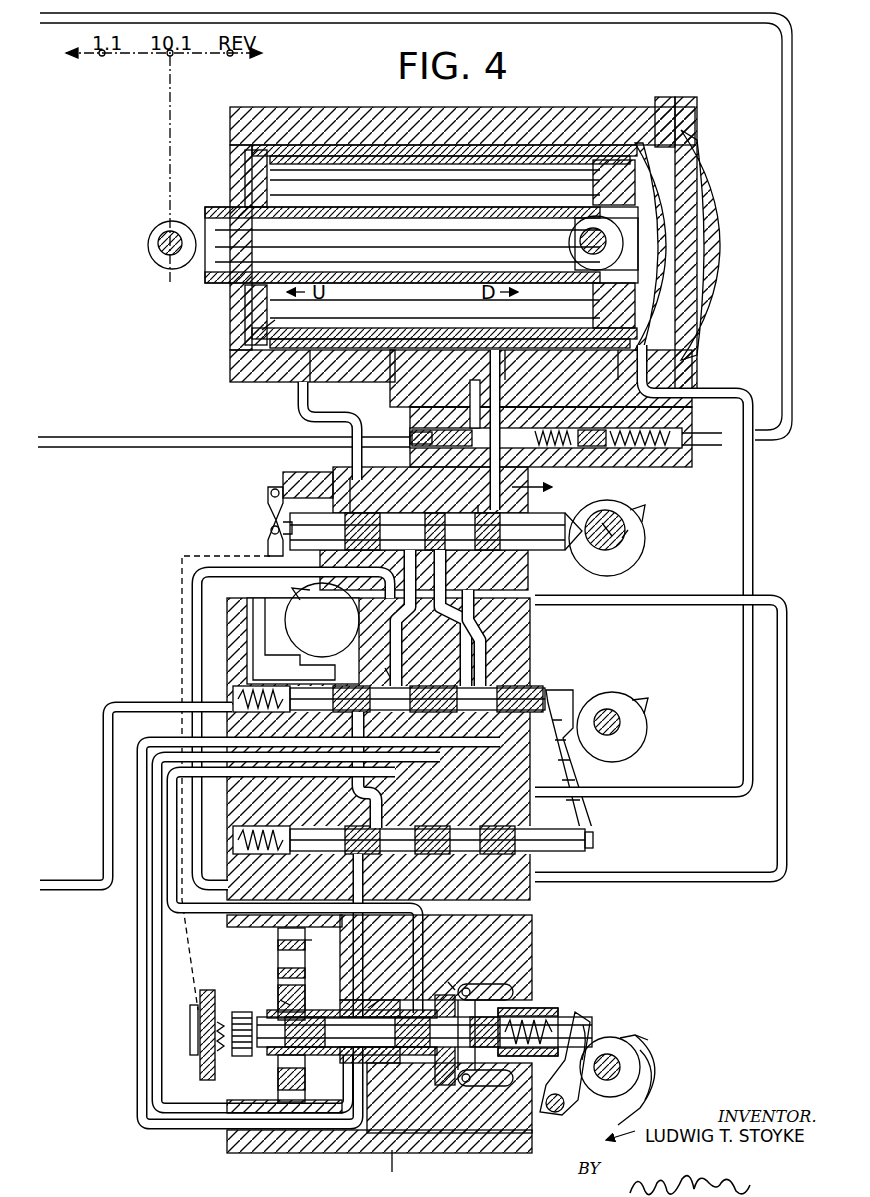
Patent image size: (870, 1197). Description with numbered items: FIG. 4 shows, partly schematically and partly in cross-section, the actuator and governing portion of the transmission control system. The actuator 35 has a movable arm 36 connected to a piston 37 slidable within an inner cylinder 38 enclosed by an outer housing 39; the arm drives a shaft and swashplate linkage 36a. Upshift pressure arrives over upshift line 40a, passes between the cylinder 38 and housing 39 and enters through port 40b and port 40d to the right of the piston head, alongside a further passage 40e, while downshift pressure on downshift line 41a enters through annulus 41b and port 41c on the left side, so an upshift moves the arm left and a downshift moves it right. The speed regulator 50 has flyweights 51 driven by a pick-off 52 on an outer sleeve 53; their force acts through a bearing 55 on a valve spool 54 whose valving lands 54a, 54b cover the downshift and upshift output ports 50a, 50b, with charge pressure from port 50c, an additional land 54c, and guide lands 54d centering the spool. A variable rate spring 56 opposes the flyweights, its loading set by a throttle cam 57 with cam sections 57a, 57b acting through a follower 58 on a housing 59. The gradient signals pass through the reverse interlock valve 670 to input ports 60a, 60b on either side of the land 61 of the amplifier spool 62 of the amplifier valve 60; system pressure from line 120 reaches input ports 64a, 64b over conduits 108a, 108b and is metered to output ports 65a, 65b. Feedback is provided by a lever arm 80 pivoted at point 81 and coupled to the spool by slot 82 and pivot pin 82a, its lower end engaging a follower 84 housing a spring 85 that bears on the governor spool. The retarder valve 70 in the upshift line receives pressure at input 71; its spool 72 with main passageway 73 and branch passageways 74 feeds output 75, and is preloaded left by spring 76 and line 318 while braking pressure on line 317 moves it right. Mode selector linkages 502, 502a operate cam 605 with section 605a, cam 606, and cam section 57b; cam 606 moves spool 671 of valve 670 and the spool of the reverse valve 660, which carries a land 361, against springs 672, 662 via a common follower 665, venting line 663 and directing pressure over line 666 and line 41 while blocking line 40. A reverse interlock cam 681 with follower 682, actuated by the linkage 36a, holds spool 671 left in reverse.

The line 318 is at (72, 22).
The line 317 is at (77, 437).
The actuator 35 is at (579, 114).
The movable arm 36 is at (203, 228).
The shaft and swashplate linkage 36a is at (158, 232).
The piston 37 is at (421, 276).
The inner cylinder 38 is at (533, 279).
The outer housing 39 is at (427, 118).
The upshift signal line 40 is at (502, 642).
The upshift line 40a is at (488, 388).
The port 40b is at (508, 352).
The port 40d is at (618, 345).
The passage 40e is at (602, 310).
The downshift signal line 41 is at (385, 668).
The downshift line 41a is at (296, 392).
The annulus 41b is at (318, 352).
The port 41c is at (272, 332).
The speed regulator 50 is at (432, 951).
The downshift output port 50a is at (290, 1080).
The upshift output port 50b is at (395, 1075).
The port 50c is at (392, 1105).
The flyweights 51 is at (513, 995).
The pick-off 52 is at (278, 957).
The outer sleeve 53 is at (300, 1062).
The valve spool 54 is at (345, 985).
The valving land 54a is at (323, 948).
The valving land 54b is at (368, 1008).
The gear tooth 54c is at (280, 1000).
The guide land 54d is at (466, 961).
The bearing 55 is at (529, 960).
The variable rate spring 56 is at (555, 1050).
The throttle cam 57 is at (661, 1037).
The cam section 57a is at (612, 1040).
The cam section 57b is at (650, 1072).
The follower 58 is at (578, 1050).
The housing 59 is at (590, 1035).
The amplifier valve 60 is at (541, 566).
The input port 60a is at (455, 650).
The input port 60b is at (403, 626).
The land 61 is at (427, 513).
The amplifier spool 62 is at (395, 513).
The input port 64a is at (472, 568).
The input port 64b is at (390, 583).
The output port 65a is at (351, 478).
The output port 65b is at (478, 482).
The retarder valve 70 is at (409, 404).
The input 71 is at (478, 420).
The spool 72 is at (602, 428).
The main passageway 73 is at (577, 428).
The branch passageways 74 is at (548, 468).
The valve output 75 is at (540, 428).
The spring 76 is at (695, 447).
The lever arm 80 is at (200, 556).
The pivot point 81 is at (268, 487).
The slot 82 is at (268, 536).
The pivot pin 82a is at (268, 520).
The follower 84 is at (217, 1025).
The spring 85 is at (232, 1056).
The conduit 108a is at (788, 716).
The conduit 108b is at (193, 591).
The line 120 is at (80, 878).
The spool land 361 is at (392, 826).
The linkage 502 is at (618, 548).
The linkage 502a is at (640, 1068).
The cam 605 is at (649, 519).
The cam section 605a is at (632, 540).
The cam 606 is at (651, 729).
The reverse valve 660 is at (556, 848).
The spring 662 is at (240, 830).
The line 663 is at (725, 392).
The common follower 665 is at (437, 733).
The line 666 is at (358, 800).
The reverse interlock valve 670 is at (545, 675).
The spool 671 is at (445, 680).
The spring 672 is at (232, 698).
The reverse interlock cam 681 is at (300, 605).
The follower 682 is at (262, 637).